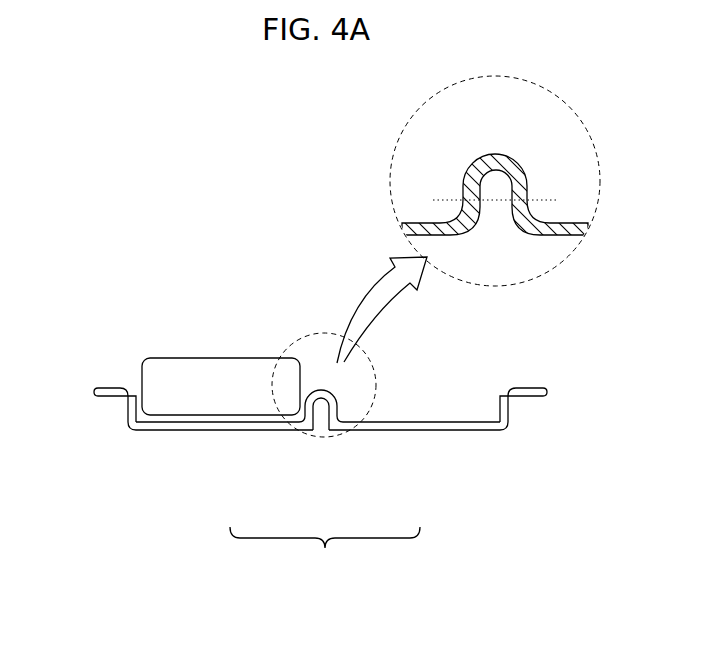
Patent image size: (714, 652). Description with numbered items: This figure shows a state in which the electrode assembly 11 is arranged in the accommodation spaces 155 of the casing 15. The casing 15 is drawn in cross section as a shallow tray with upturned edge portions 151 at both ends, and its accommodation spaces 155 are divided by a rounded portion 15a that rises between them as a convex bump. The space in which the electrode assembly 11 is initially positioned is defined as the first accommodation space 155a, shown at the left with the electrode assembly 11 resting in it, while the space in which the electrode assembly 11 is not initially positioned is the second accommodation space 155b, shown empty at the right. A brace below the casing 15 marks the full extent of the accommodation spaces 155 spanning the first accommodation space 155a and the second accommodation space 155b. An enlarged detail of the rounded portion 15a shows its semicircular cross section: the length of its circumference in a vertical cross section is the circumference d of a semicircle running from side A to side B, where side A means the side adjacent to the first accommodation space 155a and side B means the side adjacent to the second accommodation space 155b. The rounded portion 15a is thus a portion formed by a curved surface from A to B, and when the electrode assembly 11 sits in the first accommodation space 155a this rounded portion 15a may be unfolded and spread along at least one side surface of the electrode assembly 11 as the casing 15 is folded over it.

The casing 15 is at (108, 370).
The electrode assembly 11 is at (218, 373).
The flange / hook portion of clip 151 is at (117, 412).
The accommodation spaces 155 is at (325, 554).
The first accommodation space 155a is at (218, 421).
The second accommodation space 155b is at (430, 409).
The rounded portion 15a is at (321, 408).
The circumference d is at (493, 152).
The side A is at (429, 177).
The side B is at (556, 177).